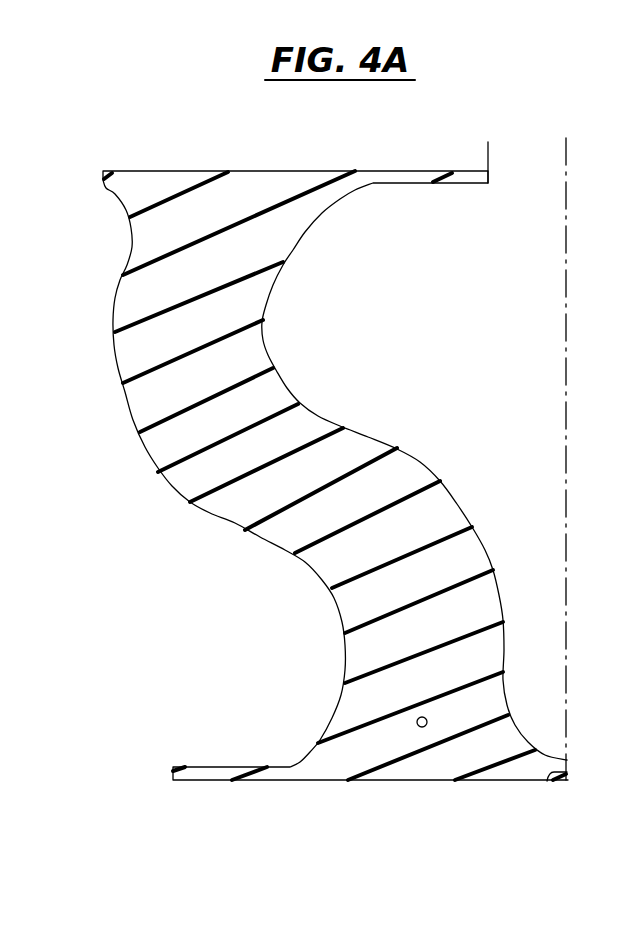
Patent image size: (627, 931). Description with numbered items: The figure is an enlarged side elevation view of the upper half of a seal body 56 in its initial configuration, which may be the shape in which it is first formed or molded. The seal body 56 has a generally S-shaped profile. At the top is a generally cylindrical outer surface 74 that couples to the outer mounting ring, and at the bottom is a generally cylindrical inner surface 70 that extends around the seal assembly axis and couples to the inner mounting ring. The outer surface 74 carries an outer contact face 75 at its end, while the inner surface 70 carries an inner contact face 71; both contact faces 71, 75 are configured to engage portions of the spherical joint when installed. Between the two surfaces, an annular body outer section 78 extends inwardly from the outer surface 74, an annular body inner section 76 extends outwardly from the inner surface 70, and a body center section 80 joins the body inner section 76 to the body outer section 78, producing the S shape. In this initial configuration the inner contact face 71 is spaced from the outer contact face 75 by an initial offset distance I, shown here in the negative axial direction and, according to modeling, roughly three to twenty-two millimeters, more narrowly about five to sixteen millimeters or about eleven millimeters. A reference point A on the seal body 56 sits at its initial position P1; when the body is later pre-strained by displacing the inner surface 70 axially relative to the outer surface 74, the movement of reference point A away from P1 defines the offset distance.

The seal body 56 is at (463, 372).
The outer surface 74 is at (273, 170).
The outer contact face 75 is at (473, 178).
The body outer section 78 is at (283, 262).
The body center section 80 is at (350, 453).
The body inner section 76 is at (470, 585).
The inner surface 70 is at (297, 780).
The inner contact face 71 is at (547, 781).
The initial position P1 is at (424, 717).
The reference point A is at (421, 727).
The initial offset distance I is at (488, 155).